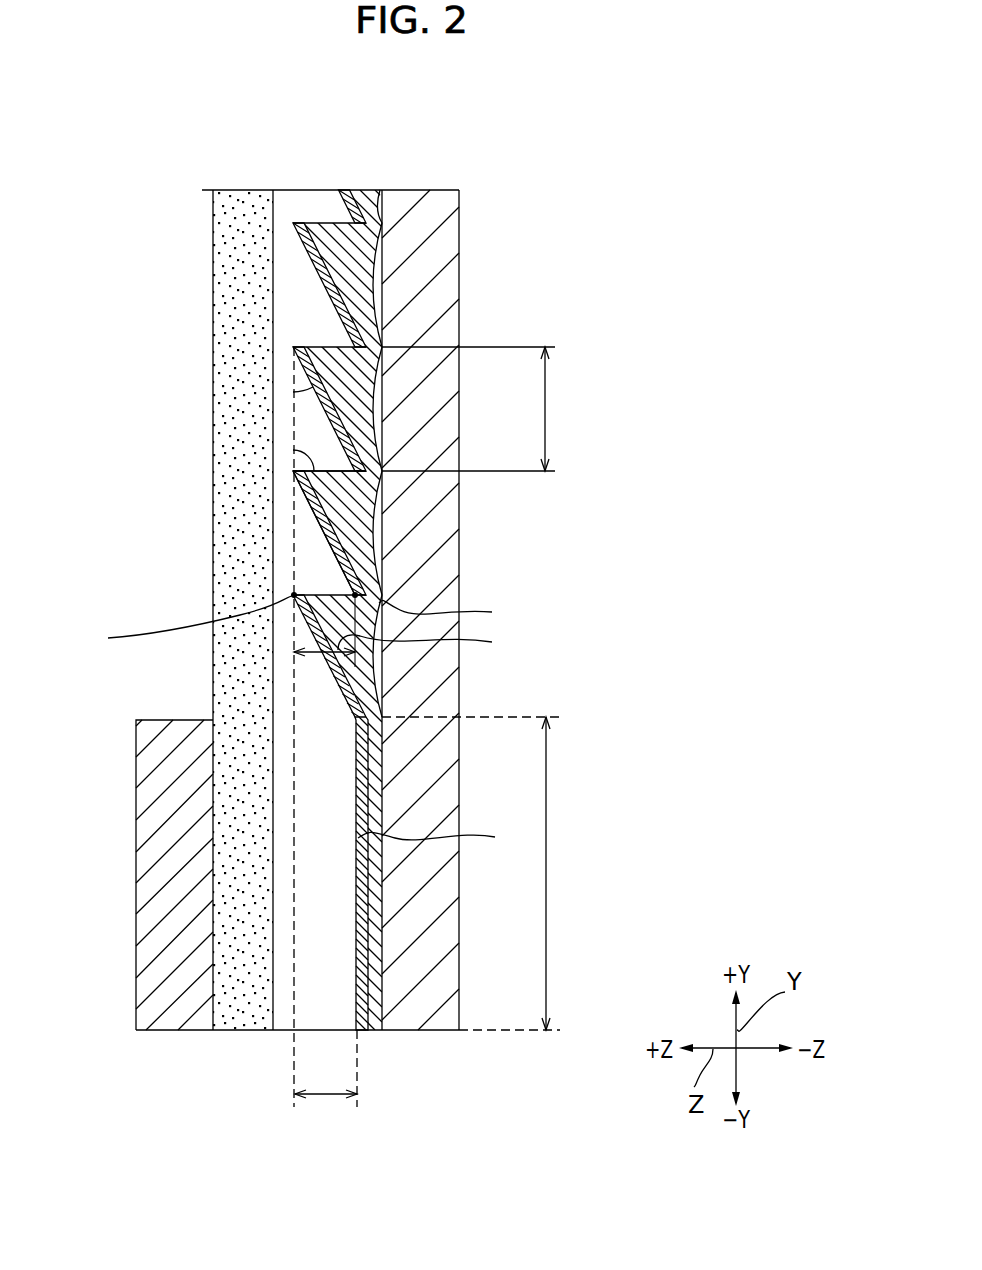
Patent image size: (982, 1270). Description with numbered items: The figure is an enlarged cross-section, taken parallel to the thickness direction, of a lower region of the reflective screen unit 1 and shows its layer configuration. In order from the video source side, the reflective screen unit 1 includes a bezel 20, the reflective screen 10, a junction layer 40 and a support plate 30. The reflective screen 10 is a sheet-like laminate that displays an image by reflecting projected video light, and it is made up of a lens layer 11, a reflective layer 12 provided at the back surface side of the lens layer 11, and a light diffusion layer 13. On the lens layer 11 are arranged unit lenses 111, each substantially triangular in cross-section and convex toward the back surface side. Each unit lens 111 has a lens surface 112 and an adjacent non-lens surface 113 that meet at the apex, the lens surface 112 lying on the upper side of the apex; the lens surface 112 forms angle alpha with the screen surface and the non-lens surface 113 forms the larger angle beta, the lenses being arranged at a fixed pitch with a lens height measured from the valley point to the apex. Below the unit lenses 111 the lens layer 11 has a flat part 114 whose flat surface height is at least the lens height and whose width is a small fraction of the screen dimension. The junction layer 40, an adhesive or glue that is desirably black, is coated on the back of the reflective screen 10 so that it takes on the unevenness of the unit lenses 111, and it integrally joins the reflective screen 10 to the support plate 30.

The reflective screen unit 1 is at (502, 167).
The reflective screen 10 is at (353, 112).
The lens layer 11 is at (293, 203).
The reflective layer 12 is at (345, 193).
The light diffusion layer 13 is at (242, 198).
The bezel 20 is at (142, 865).
The support plate 30 is at (438, 200).
The junction layer 40 is at (366, 200).
The unit lens 111 is at (306, 552).
The lens surface 112 is at (315, 521).
The non-lens surface 113 is at (355, 594).
The flat part 114 is at (348, 970).